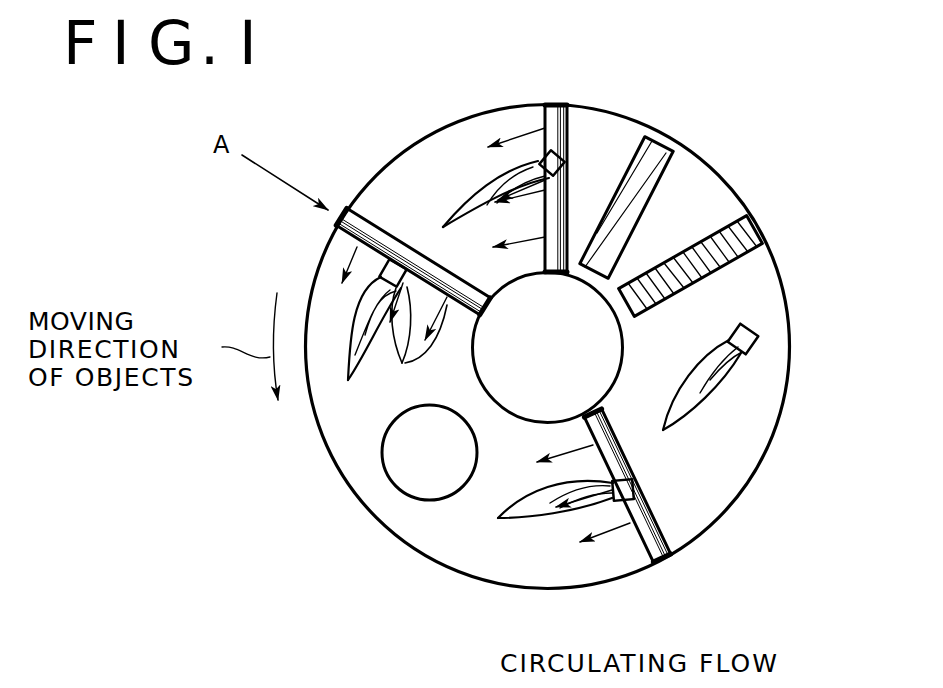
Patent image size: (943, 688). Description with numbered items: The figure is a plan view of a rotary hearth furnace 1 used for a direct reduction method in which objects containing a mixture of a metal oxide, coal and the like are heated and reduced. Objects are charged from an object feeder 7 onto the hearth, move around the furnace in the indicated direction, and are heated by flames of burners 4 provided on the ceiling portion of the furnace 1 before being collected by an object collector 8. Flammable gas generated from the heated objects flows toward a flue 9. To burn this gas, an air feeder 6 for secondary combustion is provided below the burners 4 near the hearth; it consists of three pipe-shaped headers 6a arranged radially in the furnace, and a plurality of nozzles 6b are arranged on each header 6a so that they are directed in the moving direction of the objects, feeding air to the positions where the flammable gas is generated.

The rotary hearth furnace 1 is at (397, 545).
The burners 4 is at (477, 200).
The air feeder for secondary combustion 6 is at (657, 562).
The pipe-shaped headers 6a is at (370, 228).
The nozzles 6b is at (402, 364).
The object feeder 7 is at (663, 142).
The object collector 8 is at (759, 229).
The flue 9 is at (400, 481).